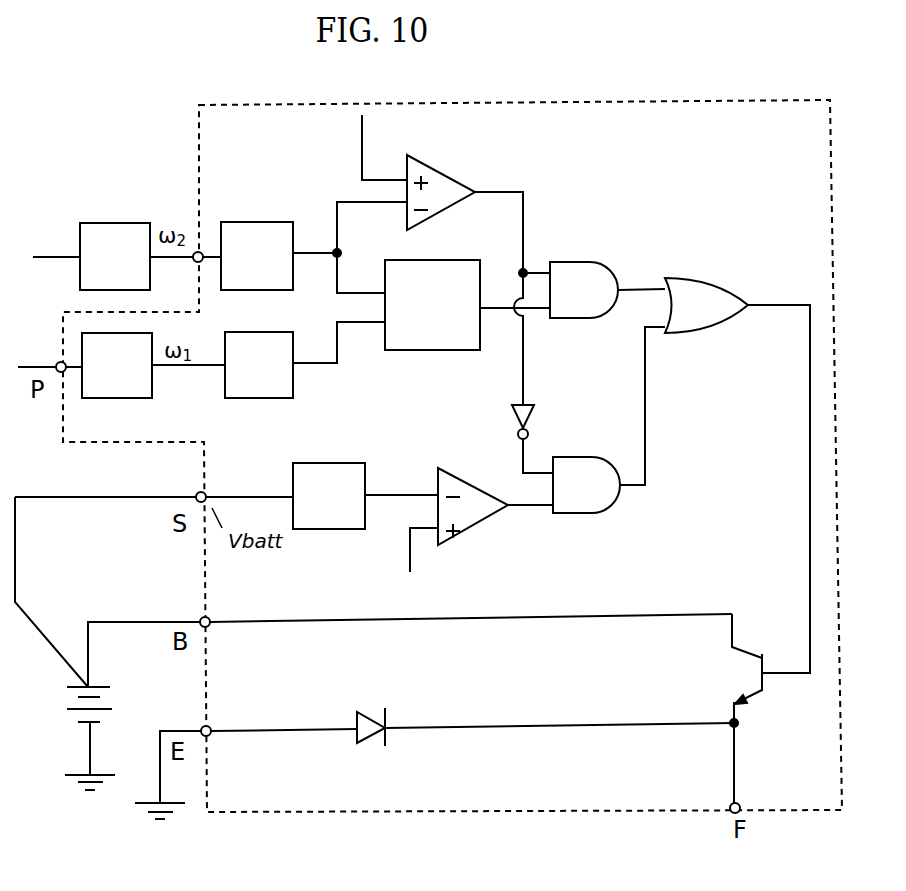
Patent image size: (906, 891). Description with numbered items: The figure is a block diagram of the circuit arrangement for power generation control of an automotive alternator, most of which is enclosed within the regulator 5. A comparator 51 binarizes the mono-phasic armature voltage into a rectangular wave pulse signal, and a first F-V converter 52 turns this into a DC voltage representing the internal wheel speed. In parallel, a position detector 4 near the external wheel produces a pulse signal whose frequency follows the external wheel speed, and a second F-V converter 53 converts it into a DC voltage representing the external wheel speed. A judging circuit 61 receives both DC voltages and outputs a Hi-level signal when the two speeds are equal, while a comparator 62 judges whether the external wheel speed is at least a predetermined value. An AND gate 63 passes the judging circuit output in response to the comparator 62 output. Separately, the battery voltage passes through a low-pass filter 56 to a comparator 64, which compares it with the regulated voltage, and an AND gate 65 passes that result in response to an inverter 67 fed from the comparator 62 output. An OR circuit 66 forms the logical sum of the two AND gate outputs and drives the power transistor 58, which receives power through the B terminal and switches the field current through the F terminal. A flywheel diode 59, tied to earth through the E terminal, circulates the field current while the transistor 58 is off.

The position detector 4 is at (100, 223).
The regulator 5 is at (612, 95).
The comparator 51 is at (143, 398).
The first F-V converter 52 is at (265, 398).
The second F-V converter 53 is at (262, 224).
The low-pass filter 56 is at (335, 530).
The power transistor 58 is at (747, 647).
The flywheel diode 59 is at (368, 708).
The judging circuit 61 is at (432, 350).
The comparator 62 is at (447, 185).
The AND gate 63 is at (575, 270).
The comparator 64 is at (483, 512).
The AND gate 65 is at (598, 513).
The OR circuit 66 is at (695, 278).
The inverter 67 is at (534, 403).